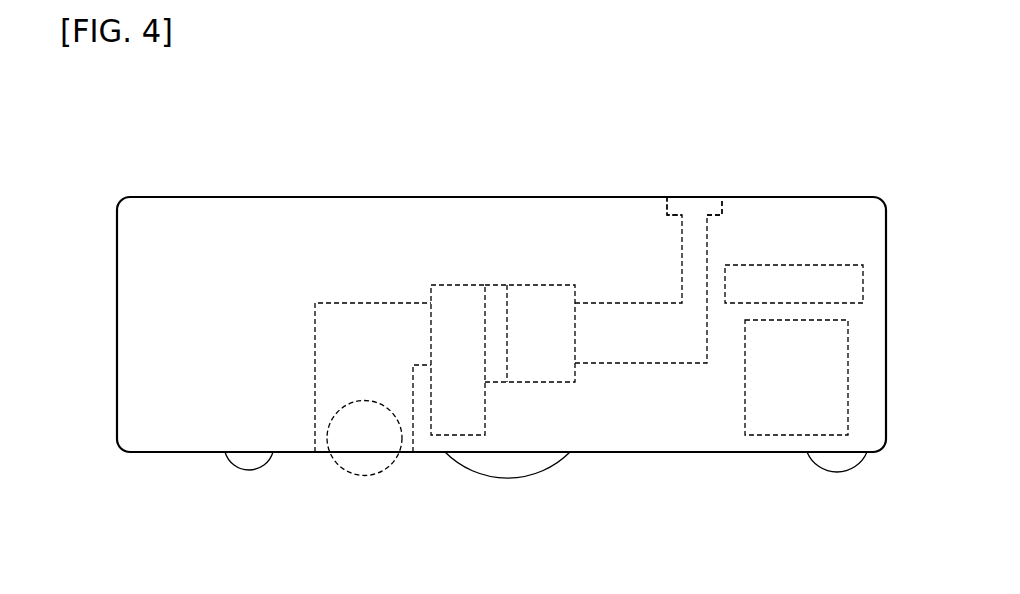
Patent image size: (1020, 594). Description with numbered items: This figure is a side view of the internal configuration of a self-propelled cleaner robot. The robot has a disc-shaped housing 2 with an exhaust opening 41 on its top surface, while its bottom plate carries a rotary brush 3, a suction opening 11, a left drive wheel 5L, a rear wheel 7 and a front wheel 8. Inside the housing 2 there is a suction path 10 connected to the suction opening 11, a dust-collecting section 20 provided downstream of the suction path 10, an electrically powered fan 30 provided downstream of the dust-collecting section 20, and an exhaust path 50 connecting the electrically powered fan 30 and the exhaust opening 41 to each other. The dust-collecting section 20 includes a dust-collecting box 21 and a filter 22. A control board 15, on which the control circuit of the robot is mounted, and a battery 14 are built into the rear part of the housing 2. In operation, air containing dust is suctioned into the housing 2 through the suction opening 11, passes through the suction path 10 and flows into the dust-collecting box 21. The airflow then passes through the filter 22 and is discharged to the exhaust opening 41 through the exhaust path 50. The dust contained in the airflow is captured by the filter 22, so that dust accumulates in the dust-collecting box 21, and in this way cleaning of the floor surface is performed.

The housing 2 is at (840, 196).
The rotary brush 3 is at (362, 476).
The left drive wheel 5L is at (503, 478).
The rear wheel 7 is at (832, 472).
The front wheel 8 is at (247, 470).
The suction path 10 is at (356, 323).
The suction opening 11 is at (404, 440).
The battery 14 is at (850, 420).
The control board 15 is at (867, 273).
The dust-collecting section 20 is at (415, 126).
The dust-collecting box 21 is at (447, 303).
The filter 22 is at (501, 303).
The electrically powered fan 30 is at (542, 303).
The exhaust opening 41 is at (700, 194).
The exhaust path 50 is at (650, 340).